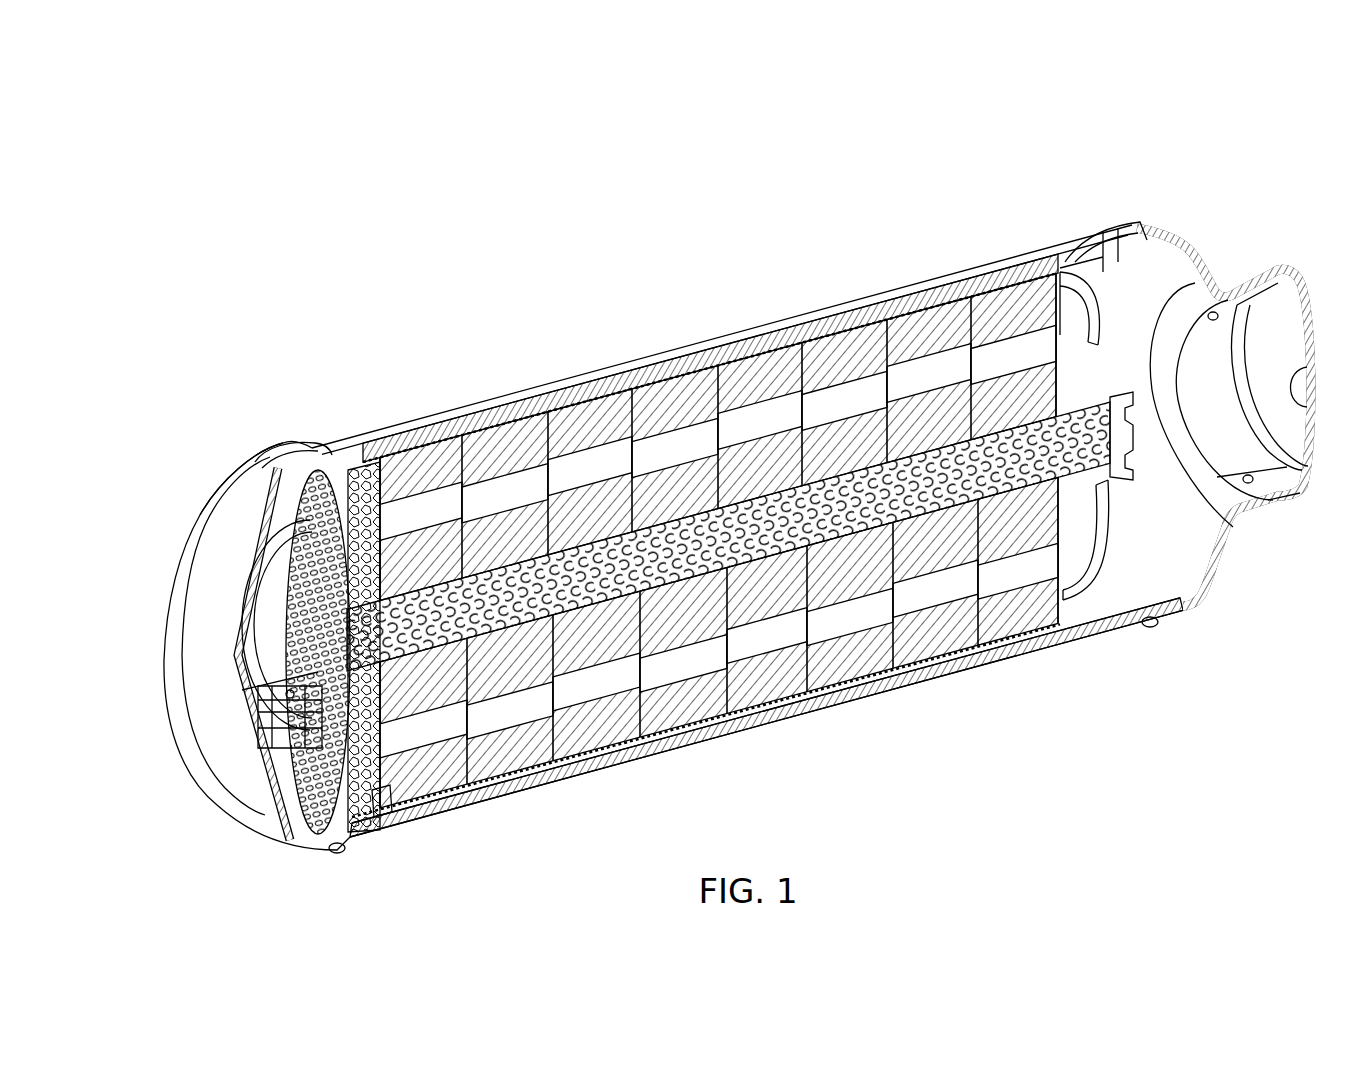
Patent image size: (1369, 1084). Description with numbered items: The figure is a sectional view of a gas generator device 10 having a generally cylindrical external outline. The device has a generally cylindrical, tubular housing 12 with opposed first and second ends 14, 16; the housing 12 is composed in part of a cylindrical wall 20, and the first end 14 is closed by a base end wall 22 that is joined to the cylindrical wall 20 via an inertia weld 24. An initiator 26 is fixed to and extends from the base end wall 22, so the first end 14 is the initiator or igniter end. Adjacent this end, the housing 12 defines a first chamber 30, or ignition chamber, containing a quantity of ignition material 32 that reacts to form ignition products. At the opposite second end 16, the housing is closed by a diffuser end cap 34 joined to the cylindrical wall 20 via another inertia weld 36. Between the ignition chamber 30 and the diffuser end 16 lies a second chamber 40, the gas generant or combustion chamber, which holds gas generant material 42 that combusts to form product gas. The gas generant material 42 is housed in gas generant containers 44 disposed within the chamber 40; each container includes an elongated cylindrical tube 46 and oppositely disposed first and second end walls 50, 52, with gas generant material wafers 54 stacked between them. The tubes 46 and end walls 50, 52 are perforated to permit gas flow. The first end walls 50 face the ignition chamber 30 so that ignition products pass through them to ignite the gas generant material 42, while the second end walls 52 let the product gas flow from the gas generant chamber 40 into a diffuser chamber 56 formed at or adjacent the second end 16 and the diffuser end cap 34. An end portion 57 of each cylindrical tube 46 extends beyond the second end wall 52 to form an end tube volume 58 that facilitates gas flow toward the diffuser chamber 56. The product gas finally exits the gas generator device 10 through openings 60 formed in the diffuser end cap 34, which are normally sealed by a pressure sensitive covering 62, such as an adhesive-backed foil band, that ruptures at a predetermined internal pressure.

The gas generator device 10 is at (712, 303).
The housing 12 is at (570, 368).
The first end 14 is at (203, 445).
The second end 16 is at (1161, 399).
The cylindrical wall 20 is at (665, 358).
The base end wall 22 is at (180, 556).
The inertia weld 24 is at (336, 852).
The initiator 26 is at (317, 718).
The first chamber 30 is at (268, 583).
The ignition material 32 is at (326, 465).
The diffuser end cap 34 is at (1200, 552).
The inertia weld 36 is at (1150, 628).
The second chamber 40 is at (660, 577).
The gas generant material 42 is at (510, 802).
The gas generant containers 44 is at (597, 772).
The cylindrical tube 46 is at (719, 644).
The first end wall 50 is at (385, 792).
The second end wall 52 is at (1066, 610).
The gas generant material wafers 54 is at (848, 677).
The diffuser chamber 56 is at (1190, 254).
The end portion 57 is at (1060, 265).
The end tube volume 58 is at (1033, 330).
The openings 60 is at (1275, 500).
The pressure sensitive covering 62 is at (1215, 340).